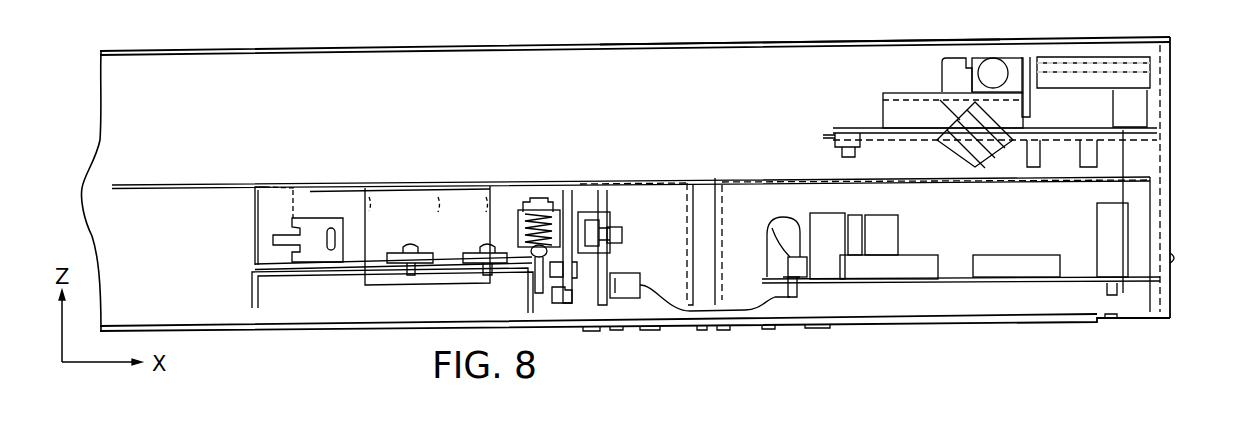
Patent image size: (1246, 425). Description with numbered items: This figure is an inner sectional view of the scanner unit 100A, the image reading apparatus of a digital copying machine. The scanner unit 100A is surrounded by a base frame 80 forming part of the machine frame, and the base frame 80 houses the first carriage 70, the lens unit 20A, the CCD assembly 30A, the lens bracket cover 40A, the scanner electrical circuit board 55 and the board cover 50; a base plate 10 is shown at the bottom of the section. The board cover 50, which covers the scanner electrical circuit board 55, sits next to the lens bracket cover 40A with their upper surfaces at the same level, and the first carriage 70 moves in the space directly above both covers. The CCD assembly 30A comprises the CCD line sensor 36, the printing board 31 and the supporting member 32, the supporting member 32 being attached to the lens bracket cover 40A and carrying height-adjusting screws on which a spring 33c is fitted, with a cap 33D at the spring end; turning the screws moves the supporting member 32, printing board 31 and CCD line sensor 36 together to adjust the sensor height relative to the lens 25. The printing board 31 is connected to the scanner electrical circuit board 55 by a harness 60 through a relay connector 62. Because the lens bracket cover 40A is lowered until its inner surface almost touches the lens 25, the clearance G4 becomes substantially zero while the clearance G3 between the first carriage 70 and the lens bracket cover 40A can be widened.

The scanner unit 100A is at (1058, 19).
The base frame 80 is at (917, 44).
The base plate 10 is at (252, 284).
The lens unit 20A is at (362, 173).
The lens 25 is at (437, 180).
The CCD assembly 30A is at (623, 223).
The printing board 31 is at (605, 192).
The supporting member 32 is at (567, 190).
The spring 33c is at (518, 211).
The spring cap 33D is at (545, 198).
The CCD line sensor 36 is at (578, 212).
The lens bracket cover 40A is at (253, 213).
The board cover 50 is at (768, 178).
The scanner electrical circuit board 55 is at (962, 273).
The harness 60 is at (797, 300).
The relay connector 62 is at (633, 272).
The first carriage 70 is at (816, 100).
The clearance G3 is at (1196, 142).
The clearance G4 is at (133, 135).